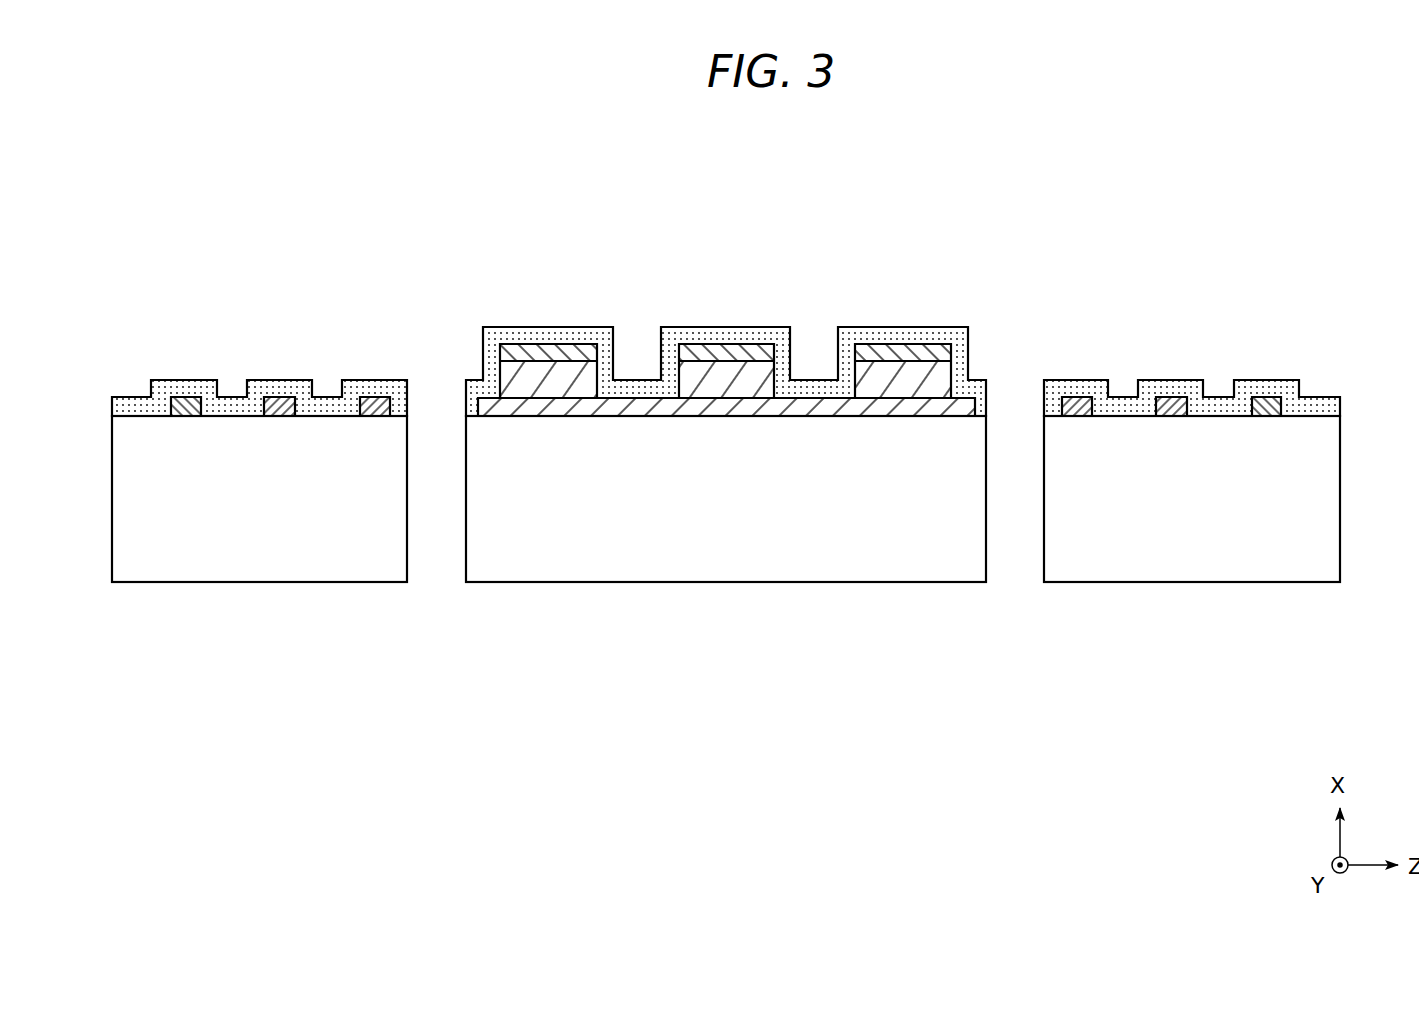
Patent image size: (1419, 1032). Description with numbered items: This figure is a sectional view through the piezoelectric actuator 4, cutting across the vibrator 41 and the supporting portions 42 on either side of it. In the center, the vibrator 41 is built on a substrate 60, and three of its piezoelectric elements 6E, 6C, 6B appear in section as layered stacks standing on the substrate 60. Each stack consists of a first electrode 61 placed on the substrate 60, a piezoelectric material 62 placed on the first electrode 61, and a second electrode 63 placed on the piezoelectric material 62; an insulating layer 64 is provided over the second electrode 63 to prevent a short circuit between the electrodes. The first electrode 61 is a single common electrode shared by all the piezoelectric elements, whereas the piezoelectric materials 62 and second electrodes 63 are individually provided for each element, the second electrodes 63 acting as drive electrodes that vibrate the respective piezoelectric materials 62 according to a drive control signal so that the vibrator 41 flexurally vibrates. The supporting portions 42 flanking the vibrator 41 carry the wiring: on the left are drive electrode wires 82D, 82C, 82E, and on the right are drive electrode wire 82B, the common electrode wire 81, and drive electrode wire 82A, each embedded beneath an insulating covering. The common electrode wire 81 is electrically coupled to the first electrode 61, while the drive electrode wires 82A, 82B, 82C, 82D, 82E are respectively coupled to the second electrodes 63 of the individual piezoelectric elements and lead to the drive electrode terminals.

The piezoelectric actuator 4 is at (1300, 208).
The vibrator 41 is at (750, 574).
The supporting portions 42 is at (256, 574).
The substrate 60 is at (632, 574).
The first electrode 61 is at (973, 407).
The piezoelectric material 62 is at (943, 380).
The second electrode 63 is at (946, 350).
The insulating layer 64 is at (847, 332).
The piezoelectric element 6B is at (903, 310).
The piezoelectric element 6C is at (727, 308).
The piezoelectric element 6E is at (551, 308).
The common electrode wire 81 is at (1170, 400).
The drive electrode wire 82A is at (1265, 400).
The drive electrode wire 82B is at (1074, 400).
The drive electrode wire 82C is at (281, 400).
The drive electrode wire 82D is at (185, 400).
The drive electrode wire 82E is at (374, 400).